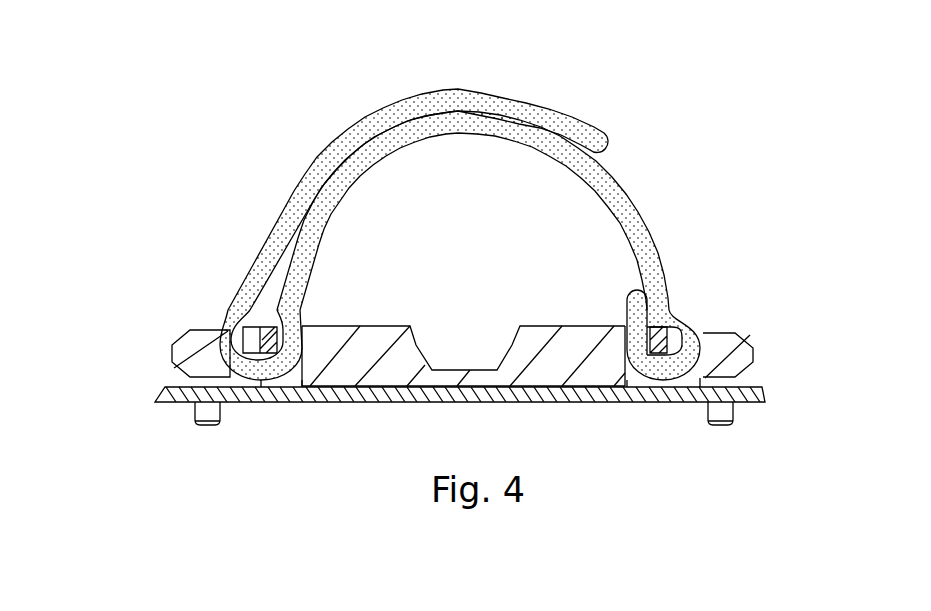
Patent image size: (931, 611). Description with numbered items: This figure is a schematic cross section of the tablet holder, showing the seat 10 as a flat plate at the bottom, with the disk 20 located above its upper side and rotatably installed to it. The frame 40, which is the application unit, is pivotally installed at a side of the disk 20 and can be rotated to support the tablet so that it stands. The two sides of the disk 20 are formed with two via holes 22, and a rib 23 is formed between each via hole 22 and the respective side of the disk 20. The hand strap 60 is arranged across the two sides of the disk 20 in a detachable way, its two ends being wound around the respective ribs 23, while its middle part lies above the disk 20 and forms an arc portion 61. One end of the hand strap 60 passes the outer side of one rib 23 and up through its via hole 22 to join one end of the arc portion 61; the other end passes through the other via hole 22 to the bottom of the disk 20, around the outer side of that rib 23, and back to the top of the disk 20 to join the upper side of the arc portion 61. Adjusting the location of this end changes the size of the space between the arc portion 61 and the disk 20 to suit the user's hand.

The seat 10 is at (164, 387).
The disk 20 is at (553, 332).
The via hole 22 is at (306, 322).
The rib 23 is at (264, 327).
The frame 40 is at (737, 333).
The hand strap 60 is at (614, 176).
The arc portion 61 is at (448, 85).